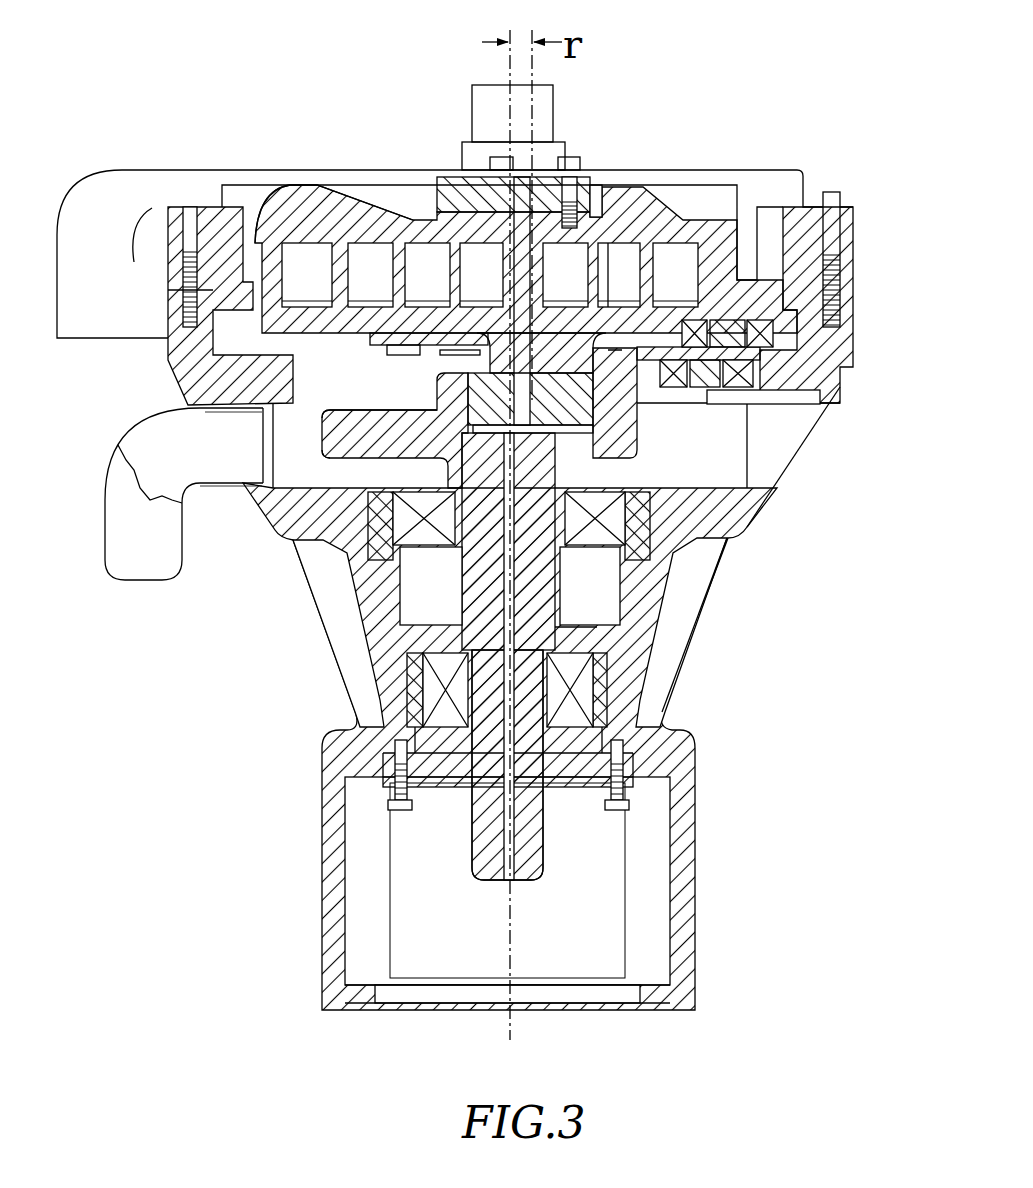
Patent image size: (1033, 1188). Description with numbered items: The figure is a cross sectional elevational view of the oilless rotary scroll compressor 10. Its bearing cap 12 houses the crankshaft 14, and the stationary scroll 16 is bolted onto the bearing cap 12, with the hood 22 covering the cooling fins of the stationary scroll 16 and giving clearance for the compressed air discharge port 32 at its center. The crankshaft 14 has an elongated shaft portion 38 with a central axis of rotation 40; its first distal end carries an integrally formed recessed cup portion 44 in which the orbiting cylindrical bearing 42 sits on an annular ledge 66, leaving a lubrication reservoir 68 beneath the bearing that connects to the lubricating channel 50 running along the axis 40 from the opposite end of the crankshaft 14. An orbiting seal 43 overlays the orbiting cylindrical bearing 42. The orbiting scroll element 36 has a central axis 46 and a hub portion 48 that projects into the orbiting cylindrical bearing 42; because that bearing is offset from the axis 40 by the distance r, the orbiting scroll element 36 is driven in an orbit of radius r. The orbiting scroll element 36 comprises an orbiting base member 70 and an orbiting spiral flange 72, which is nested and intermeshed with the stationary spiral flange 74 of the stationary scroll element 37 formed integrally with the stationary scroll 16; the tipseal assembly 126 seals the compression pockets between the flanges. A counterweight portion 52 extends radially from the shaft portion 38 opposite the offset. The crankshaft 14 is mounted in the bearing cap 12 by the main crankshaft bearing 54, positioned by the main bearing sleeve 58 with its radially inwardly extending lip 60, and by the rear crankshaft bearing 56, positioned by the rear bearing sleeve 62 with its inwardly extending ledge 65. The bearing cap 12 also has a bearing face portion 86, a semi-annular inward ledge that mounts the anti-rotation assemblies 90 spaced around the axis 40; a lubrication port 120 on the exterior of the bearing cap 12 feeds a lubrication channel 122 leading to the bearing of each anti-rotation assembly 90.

The scroll compressor 10 is at (815, 697).
The bearing cap 12 is at (373, 630).
The crankshaft 14 is at (460, 572).
The stationary scroll 16 is at (526, 250).
The hood 22 is at (770, 170).
The compressed air discharge port 32 is at (460, 186).
The orbiting scroll element 36 is at (250, 333).
The stationary scroll element 37 is at (668, 284).
The elongated shaft portion 38 is at (488, 851).
The central axis of rotation 40 is at (508, 104).
The orbiting cylindrical bearing 42 is at (605, 428).
The orbiting seal 43 is at (640, 393).
The recessed cup portion 44 is at (546, 432).
The central axis 46 is at (534, 104).
The hub portion 48 is at (505, 400).
The lubricating channel 50 is at (507, 595).
The counterweight portion 52 is at (325, 430).
The main crankshaft bearing 54 is at (597, 540).
The rear crankshaft bearing 56 is at (573, 667).
The main bearing sleeve 58 is at (640, 520).
The radially inwardly extending lip 60 is at (393, 530).
The rear bearing sleeve 62 is at (410, 690).
The inwardly extending ledge 65 is at (660, 718).
The annular ledge 66 is at (468, 418).
The lubrication reservoir 68 is at (578, 433).
The orbiting base member 70 is at (356, 320).
The orbiting spiral flange 72 is at (332, 272).
The stationary spiral flange 74 is at (667, 253).
The bearing face portion 86 is at (772, 368).
The anti-rotation assembly 90 is at (786, 348).
The lubrication port 120 is at (832, 398).
The lubrication channel 122 is at (812, 424).
The tipseal assembly 126 is at (609, 290).